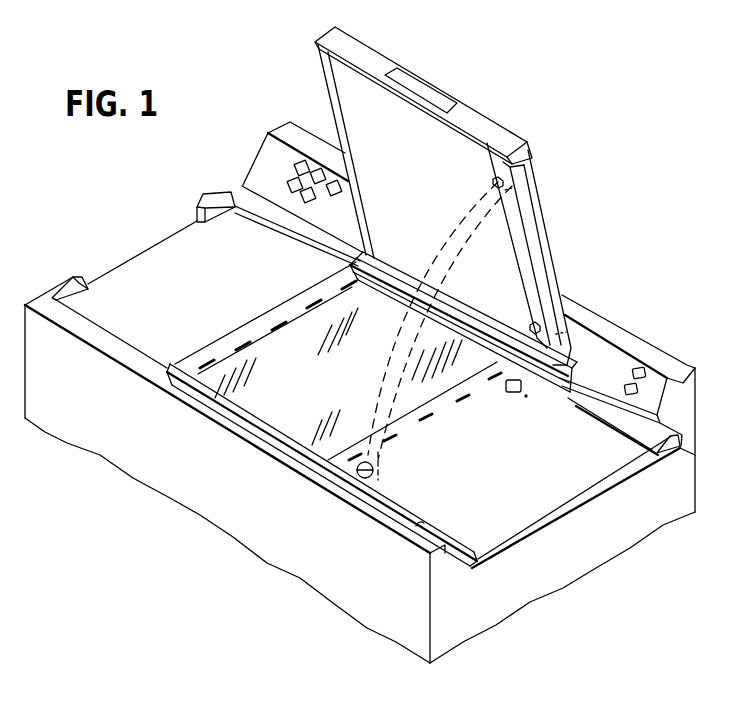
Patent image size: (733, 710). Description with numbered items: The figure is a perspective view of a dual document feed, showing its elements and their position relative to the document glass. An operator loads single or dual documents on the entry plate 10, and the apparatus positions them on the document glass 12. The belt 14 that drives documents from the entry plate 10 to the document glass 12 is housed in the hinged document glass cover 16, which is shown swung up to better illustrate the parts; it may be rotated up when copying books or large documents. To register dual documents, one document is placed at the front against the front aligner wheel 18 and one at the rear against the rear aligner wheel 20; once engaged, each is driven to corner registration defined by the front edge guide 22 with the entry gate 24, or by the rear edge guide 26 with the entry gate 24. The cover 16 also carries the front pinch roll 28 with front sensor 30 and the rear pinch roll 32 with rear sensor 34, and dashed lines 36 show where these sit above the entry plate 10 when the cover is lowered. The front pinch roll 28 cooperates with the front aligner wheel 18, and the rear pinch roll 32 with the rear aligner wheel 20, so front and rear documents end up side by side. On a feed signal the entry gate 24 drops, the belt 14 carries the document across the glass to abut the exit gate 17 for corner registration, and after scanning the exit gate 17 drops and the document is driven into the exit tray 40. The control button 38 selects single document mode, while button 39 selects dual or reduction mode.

The entry plate 10 is at (533, 507).
The document glass 12 is at (263, 398).
The belt 14 is at (353, 93).
The document glass cover 16 is at (468, 116).
The exit gate 17 is at (245, 343).
The front aligner wheel 18 is at (356, 476).
The rear aligner wheel 20 is at (515, 392).
The front edge guide 22 is at (262, 440).
The entry gate 24 is at (366, 455).
The rear edge guide 26 is at (602, 419).
The front pinch roll 28 is at (492, 182).
The front sensor 30 is at (520, 187).
The rear pinch roll 32 is at (530, 323).
The rear sensor 34 is at (554, 329).
The dashed lines 36 is at (458, 248).
The control button 38 is at (640, 368).
The button 39 is at (640, 389).
The exit tray 40 is at (175, 263).